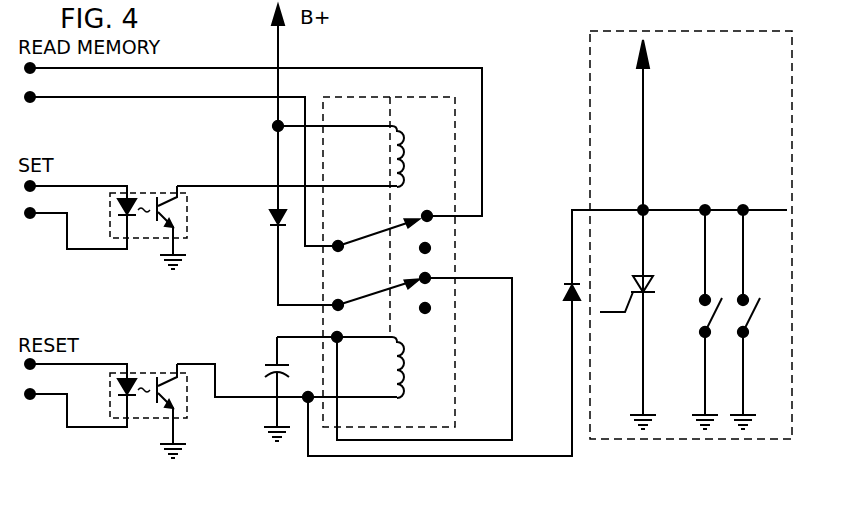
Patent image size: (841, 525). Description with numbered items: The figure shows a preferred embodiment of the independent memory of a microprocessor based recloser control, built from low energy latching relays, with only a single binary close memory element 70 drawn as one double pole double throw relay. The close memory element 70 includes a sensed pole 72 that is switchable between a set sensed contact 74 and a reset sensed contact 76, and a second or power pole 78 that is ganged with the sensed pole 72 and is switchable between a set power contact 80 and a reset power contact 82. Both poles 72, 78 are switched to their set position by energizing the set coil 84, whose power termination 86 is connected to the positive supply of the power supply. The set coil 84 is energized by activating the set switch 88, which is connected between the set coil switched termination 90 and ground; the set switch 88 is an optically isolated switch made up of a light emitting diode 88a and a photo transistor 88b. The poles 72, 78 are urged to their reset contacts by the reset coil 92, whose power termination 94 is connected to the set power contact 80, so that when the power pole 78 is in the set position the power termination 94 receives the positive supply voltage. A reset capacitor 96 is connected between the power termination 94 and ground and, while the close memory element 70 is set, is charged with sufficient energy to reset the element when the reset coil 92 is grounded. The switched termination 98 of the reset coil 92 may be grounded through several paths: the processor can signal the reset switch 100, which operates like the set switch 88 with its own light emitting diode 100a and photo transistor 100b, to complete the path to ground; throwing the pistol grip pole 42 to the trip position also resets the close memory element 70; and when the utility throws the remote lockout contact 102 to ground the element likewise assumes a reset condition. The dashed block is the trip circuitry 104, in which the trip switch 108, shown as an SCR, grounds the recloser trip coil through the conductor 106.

The pole 42 is at (703, 328).
The close memory element 70 is at (438, 148).
The sensed pole 72 is at (372, 237).
The set sensed contact 74 is at (428, 212).
The reset sensed contact 76 is at (430, 248).
The power pole 78 is at (373, 296).
The set power contact 80 is at (430, 280).
The reset power contact 82 is at (430, 310).
The set coil 84 is at (396, 127).
The power termination 86 is at (276, 124).
The set switch 88 is at (169, 215).
The light emitting diode 88a is at (122, 222).
The photo transistor 88b is at (168, 214).
The set coil switched termination 90 is at (230, 186).
The reset coil 92 is at (404, 360).
The power termination 94 is at (342, 333).
The reset capacitor 96 is at (266, 362).
The switched termination 98 is at (308, 392).
The reset switch 100 is at (165, 392).
The light emitting diode 100a is at (122, 400).
The photo transistor 100b is at (168, 398).
The remote lockout contact 102 is at (748, 330).
The trip circuitry 104 is at (680, 27).
The conductor 106 is at (641, 90).
The trip switch 108 is at (636, 282).